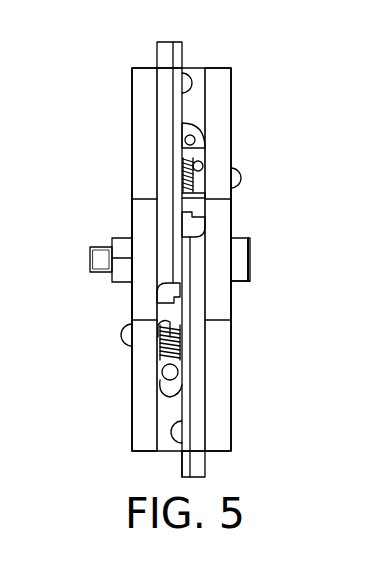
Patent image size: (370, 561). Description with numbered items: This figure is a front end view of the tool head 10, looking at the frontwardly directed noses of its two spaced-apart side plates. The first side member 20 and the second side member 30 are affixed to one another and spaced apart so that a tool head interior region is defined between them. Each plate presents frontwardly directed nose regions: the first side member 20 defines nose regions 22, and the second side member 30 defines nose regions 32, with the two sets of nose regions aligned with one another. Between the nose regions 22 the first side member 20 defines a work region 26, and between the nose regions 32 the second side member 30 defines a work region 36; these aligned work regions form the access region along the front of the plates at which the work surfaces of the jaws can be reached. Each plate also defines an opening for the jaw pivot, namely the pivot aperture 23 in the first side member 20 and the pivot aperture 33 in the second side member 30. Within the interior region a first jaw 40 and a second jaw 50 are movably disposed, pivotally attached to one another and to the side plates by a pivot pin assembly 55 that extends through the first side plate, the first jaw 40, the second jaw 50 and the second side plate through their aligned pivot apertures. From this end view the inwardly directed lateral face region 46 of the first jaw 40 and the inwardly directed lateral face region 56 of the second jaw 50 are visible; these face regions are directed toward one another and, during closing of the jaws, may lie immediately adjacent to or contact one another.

The tool head 10 is at (253, 52).
The first side member 20 is at (145, 116).
The nose regions 22 is at (146, 191).
The pivot aperture 23 is at (112, 239).
The work region 26 is at (115, 212).
The second side member 30 is at (222, 105).
The nose regions 32 is at (232, 178).
The pivot aperture 33 is at (232, 281).
The work region 36 is at (258, 219).
The first jaw 40 is at (165, 42).
The lateral face region 46 is at (183, 52).
The second jaw 50 is at (205, 466).
The pivot pin assembly 55 is at (251, 259).
The lateral face region 56 is at (181, 466).